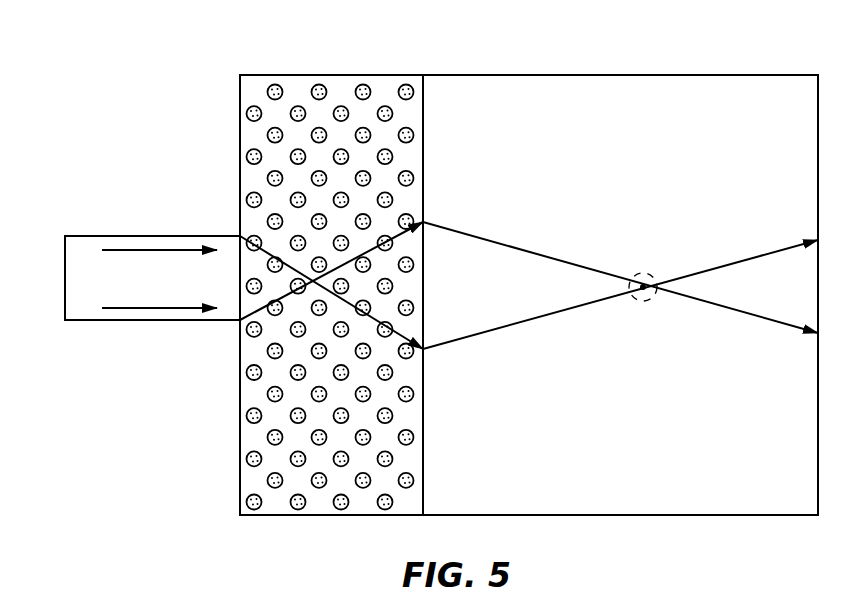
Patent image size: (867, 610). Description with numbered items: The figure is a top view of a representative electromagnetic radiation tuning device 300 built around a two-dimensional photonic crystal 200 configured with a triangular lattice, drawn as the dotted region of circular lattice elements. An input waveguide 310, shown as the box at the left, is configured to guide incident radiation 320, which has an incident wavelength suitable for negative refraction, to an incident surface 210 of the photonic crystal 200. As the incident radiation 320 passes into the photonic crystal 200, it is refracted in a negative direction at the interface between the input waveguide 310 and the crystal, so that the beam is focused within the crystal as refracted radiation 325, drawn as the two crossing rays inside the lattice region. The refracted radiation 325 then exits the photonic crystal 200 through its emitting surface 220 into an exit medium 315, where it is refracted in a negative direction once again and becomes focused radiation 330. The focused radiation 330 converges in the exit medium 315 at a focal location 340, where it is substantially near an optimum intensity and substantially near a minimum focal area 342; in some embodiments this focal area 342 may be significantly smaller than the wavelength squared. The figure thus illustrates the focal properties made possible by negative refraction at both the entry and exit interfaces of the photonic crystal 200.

The electromagnetic radiation tuning device 300 is at (128, 94).
The 2D photonic crystal 200 is at (345, 74).
The incident surface 210 is at (240, 435).
The emitting surface 220 is at (423, 411).
The input waveguide 310 is at (157, 320).
The exit medium 315 is at (528, 74).
The incident radiation 320 is at (183, 250).
The refracted radiation 325 is at (268, 248).
The focused radiation 330 is at (563, 265).
The focal location 340 is at (648, 282).
The focal area 342 is at (648, 300).